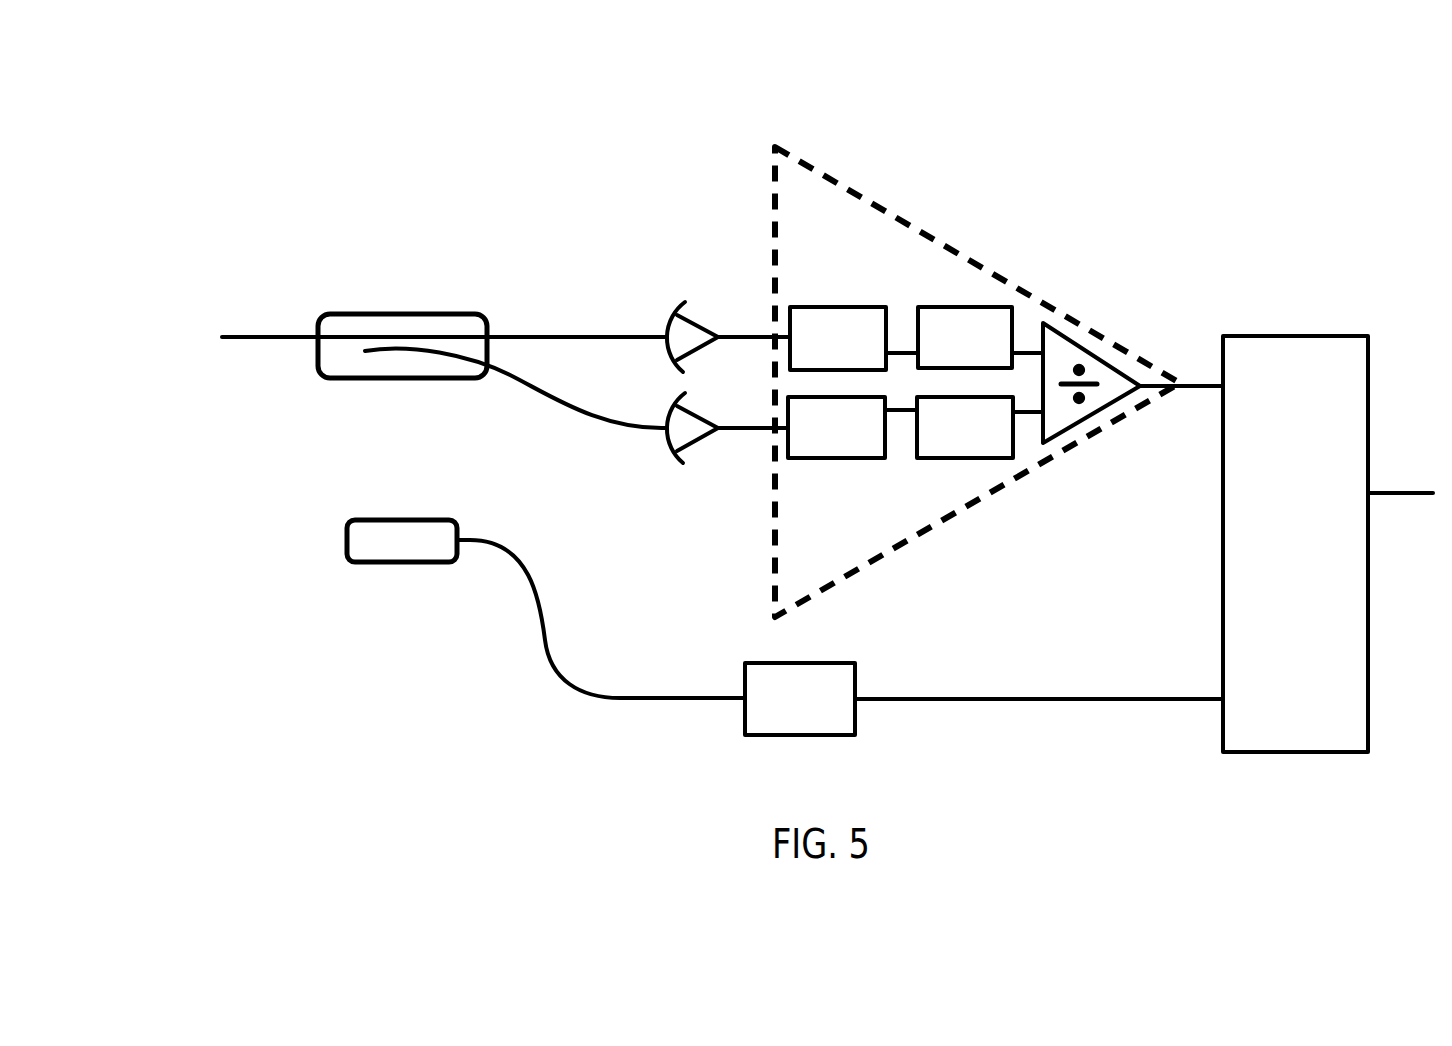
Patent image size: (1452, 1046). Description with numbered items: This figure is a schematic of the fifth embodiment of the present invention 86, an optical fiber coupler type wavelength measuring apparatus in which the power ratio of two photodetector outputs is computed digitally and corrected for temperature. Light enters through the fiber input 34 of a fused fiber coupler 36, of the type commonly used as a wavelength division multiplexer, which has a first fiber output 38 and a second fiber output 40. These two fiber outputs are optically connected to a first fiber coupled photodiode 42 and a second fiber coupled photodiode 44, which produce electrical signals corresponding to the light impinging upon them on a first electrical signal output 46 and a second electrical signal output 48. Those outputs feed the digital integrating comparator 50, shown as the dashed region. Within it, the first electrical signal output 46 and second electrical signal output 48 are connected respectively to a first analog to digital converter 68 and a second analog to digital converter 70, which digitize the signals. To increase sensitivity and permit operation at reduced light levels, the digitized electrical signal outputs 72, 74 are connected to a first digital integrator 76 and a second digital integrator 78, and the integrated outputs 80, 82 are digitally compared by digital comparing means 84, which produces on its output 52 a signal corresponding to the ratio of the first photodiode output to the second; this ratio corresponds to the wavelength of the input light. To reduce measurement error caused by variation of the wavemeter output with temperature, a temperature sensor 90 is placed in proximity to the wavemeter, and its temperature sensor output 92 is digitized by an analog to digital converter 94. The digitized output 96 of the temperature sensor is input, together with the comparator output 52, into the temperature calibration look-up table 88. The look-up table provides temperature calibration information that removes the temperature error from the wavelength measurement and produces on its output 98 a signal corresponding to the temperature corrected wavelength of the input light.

The fiber input 34 is at (252, 337).
The fused fiber coupler 36 is at (412, 325).
The first fiber output 38 is at (556, 337).
The second fiber output 40 is at (610, 432).
The first fiber coupled photodiode 42 is at (692, 335).
The second fiber coupled photodiode 44 is at (693, 425).
The first electrical signal output 46 is at (755, 330).
The second electrical signal output 48 is at (757, 432).
The digital integrating comparator 50 is at (802, 260).
The comparator output 52 is at (1210, 387).
The first analog to digital converter 68 is at (832, 320).
The second analog to digital converter 70 is at (835, 445).
The first digitized electrical signal output 72 is at (897, 352).
The second digitized electrical signal output 74 is at (903, 412).
The first digital integrator 76 is at (947, 317).
The second digital integrator 78 is at (945, 447).
The first integrated output 80 is at (1023, 352).
The second integrated output 82 is at (1025, 412).
The digital comparing means 84 is at (1060, 367).
The fifth embodiment of the present invention 86 is at (688, 130).
The temperature calibration look-up table 88 is at (1260, 393).
The temperature sensor 90 is at (422, 535).
The temperature sensor output 92 is at (555, 660).
The analog to digital converter 94 is at (848, 667).
The digitized output of the temperature sensor 96 is at (1023, 699).
The look-up table output 98 is at (1407, 490).